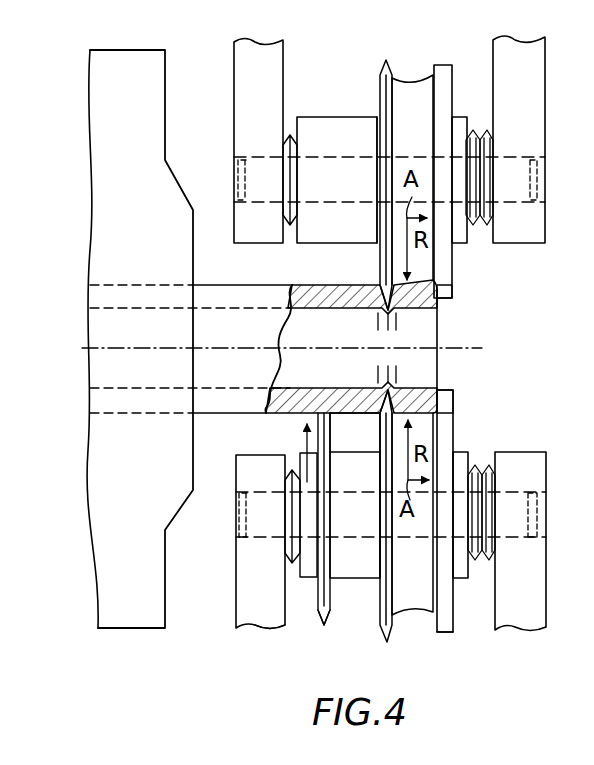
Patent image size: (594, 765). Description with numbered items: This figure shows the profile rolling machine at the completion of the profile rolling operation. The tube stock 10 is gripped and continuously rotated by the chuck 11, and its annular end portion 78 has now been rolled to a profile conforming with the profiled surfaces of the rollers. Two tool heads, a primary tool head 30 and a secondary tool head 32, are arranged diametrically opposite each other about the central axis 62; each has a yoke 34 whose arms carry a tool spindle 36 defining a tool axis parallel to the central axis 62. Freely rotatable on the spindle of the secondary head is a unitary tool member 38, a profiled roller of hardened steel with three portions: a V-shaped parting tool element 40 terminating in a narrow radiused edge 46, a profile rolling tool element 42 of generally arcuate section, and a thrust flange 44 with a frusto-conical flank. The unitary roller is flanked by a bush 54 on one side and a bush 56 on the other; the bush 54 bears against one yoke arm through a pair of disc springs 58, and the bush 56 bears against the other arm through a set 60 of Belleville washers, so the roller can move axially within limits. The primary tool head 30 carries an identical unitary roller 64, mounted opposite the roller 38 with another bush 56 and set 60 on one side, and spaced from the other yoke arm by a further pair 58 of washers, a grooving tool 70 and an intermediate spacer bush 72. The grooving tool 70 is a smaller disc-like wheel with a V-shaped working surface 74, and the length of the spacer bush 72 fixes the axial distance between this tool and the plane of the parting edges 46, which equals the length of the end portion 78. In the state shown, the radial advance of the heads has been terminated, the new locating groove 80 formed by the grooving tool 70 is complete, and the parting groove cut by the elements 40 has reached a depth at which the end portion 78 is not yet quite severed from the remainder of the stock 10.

The tube stock 10 is at (299, 349).
The chuck 11 is at (141, 532).
The primary tool head 30 is at (277, 636).
The secondary tool head 32 is at (345, 104).
The yoke 34 is at (507, 46).
The tool spindle 36 is at (236, 182).
The unitary tool member 38 is at (453, 82).
The parting tool element 40 is at (383, 255).
The profile rolling tool element 42 is at (408, 105).
The thrust flange 44 is at (452, 283).
The radiused edge 46 is at (383, 167).
The bush 54 is at (352, 152).
The bush 56 is at (457, 240).
The disc springs 58 is at (287, 135).
The set of Belleville washers 60 is at (477, 129).
The central axis 62 is at (458, 345).
The unitary roller 64 is at (450, 634).
The grooving tool 70 is at (326, 598).
The spacer bush 72 is at (370, 482).
The V-shaped working surface 74 is at (328, 432).
The annular end portion 78 is at (428, 369).
The locating groove 80 is at (318, 282).